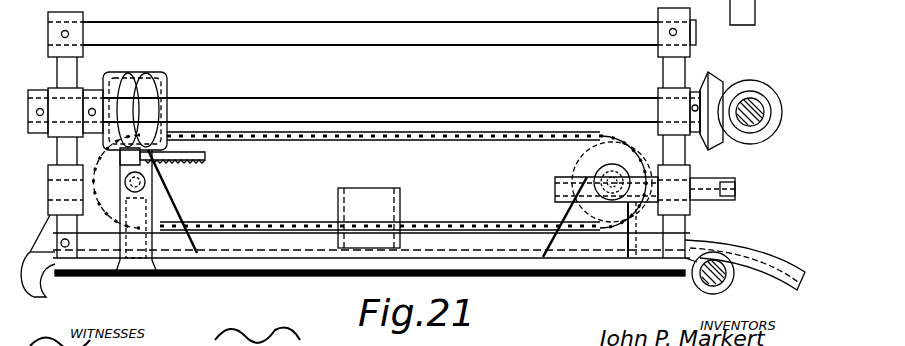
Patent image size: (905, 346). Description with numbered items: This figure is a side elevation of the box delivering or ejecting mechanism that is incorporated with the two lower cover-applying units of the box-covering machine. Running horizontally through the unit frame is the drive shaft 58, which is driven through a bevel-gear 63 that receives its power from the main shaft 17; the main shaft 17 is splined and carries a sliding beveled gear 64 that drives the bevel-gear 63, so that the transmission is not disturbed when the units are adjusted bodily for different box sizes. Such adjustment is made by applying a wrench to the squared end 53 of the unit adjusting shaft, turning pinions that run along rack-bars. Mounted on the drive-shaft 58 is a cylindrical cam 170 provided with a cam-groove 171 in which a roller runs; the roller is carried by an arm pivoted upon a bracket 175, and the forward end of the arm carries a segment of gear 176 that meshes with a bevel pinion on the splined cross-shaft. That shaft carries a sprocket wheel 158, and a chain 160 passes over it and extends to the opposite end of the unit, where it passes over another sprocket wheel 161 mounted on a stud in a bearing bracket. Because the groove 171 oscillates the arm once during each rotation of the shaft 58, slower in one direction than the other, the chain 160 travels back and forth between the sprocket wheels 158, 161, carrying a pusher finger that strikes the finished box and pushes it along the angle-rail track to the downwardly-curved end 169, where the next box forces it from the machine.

The main shaft 17 is at (752, 120).
The squared end of shaft 53 is at (735, 180).
The shaft 58 is at (352, 107).
The bevel-gear 63 is at (712, 80).
The sliding beveled gear 64 is at (756, 82).
The sprocket wheel 158 is at (163, 213).
The chain 160 is at (430, 225).
The sprocket wheel 161 is at (582, 158).
The downwardly-curved end 169 is at (720, 242).
The cylindrical cam 170 is at (167, 86).
The cam-groove 171 is at (135, 75).
The bracket 175 is at (255, 224).
The segment of gear 176 is at (207, 155).